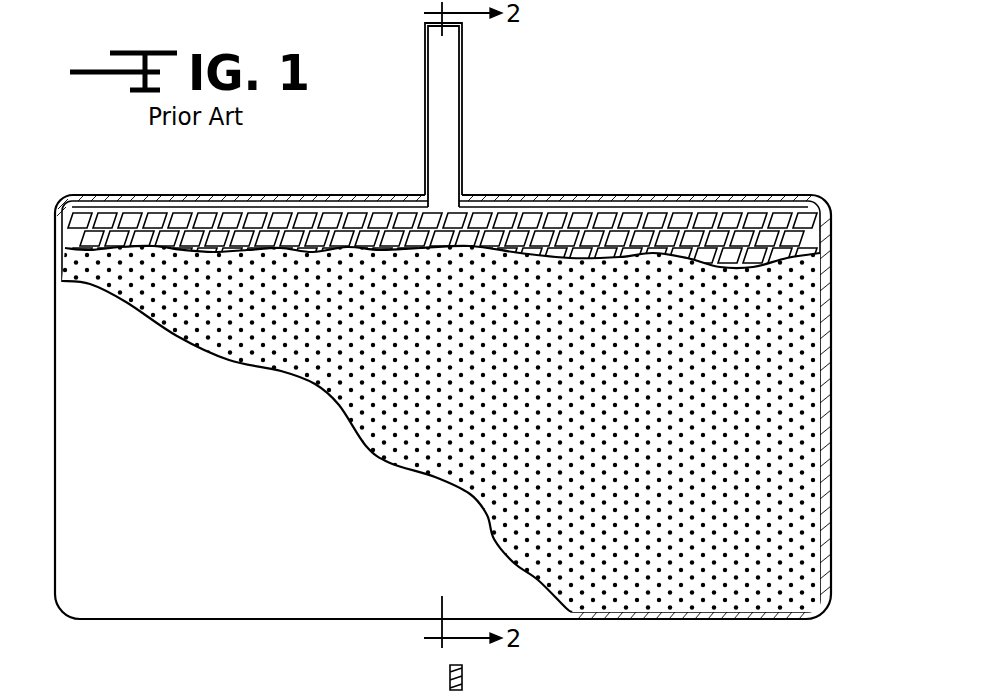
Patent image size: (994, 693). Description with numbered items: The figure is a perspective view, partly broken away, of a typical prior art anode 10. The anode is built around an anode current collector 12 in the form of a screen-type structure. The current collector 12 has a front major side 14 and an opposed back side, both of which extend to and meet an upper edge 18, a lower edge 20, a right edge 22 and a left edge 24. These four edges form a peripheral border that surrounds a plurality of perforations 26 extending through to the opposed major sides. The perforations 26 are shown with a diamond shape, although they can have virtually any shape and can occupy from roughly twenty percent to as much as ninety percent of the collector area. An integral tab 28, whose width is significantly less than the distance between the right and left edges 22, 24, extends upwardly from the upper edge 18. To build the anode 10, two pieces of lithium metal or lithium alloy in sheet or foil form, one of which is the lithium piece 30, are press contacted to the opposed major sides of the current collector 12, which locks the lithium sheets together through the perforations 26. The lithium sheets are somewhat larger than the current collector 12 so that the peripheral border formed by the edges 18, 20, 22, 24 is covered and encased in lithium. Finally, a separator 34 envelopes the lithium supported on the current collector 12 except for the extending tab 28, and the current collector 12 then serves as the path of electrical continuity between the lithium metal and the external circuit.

The anode 10 is at (738, 132).
The anode current collector 12 is at (822, 205).
The front major side 14 is at (450, 202).
The upper edge 18 is at (565, 201).
The lower edge 20 is at (657, 613).
The right edge 22 is at (825, 433).
The left edge 24 is at (62, 263).
The perforations 26 is at (195, 219).
The integral tab 28 is at (445, 136).
The lithium metal piece 30 is at (690, 424).
The separator 34 is at (190, 605).